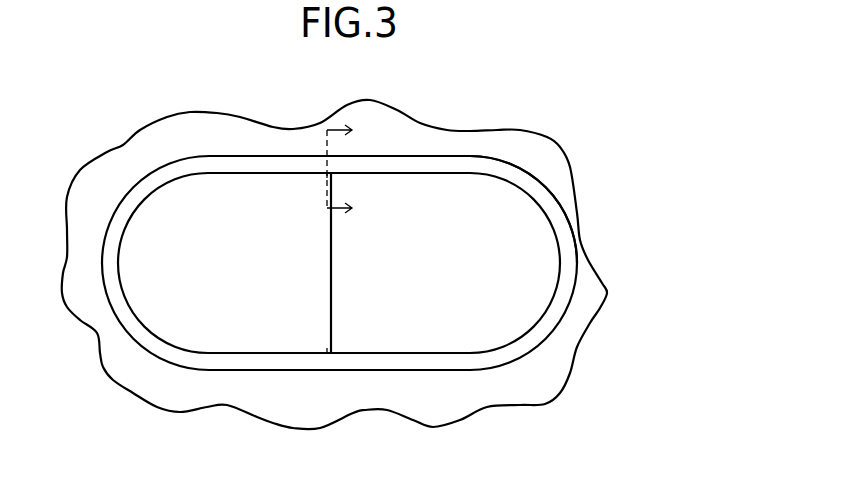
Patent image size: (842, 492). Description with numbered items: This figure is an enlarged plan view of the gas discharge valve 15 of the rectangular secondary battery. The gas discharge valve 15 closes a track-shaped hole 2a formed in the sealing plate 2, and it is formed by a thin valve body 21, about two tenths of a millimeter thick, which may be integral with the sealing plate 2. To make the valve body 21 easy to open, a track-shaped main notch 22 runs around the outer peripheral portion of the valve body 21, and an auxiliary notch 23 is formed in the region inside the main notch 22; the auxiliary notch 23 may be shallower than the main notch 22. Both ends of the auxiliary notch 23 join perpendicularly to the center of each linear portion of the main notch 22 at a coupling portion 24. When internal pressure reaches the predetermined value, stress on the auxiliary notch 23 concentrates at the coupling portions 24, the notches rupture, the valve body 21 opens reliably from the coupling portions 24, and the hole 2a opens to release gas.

The sealing plate 2 is at (550, 157).
The track-shaped hole 2a is at (522, 182).
The gas discharge valve 15 is at (338, 143).
The valve body 21 is at (215, 205).
The main notch 22 is at (273, 173).
The auxiliary notch 23 is at (332, 309).
The coupling portion 24 is at (333, 176).